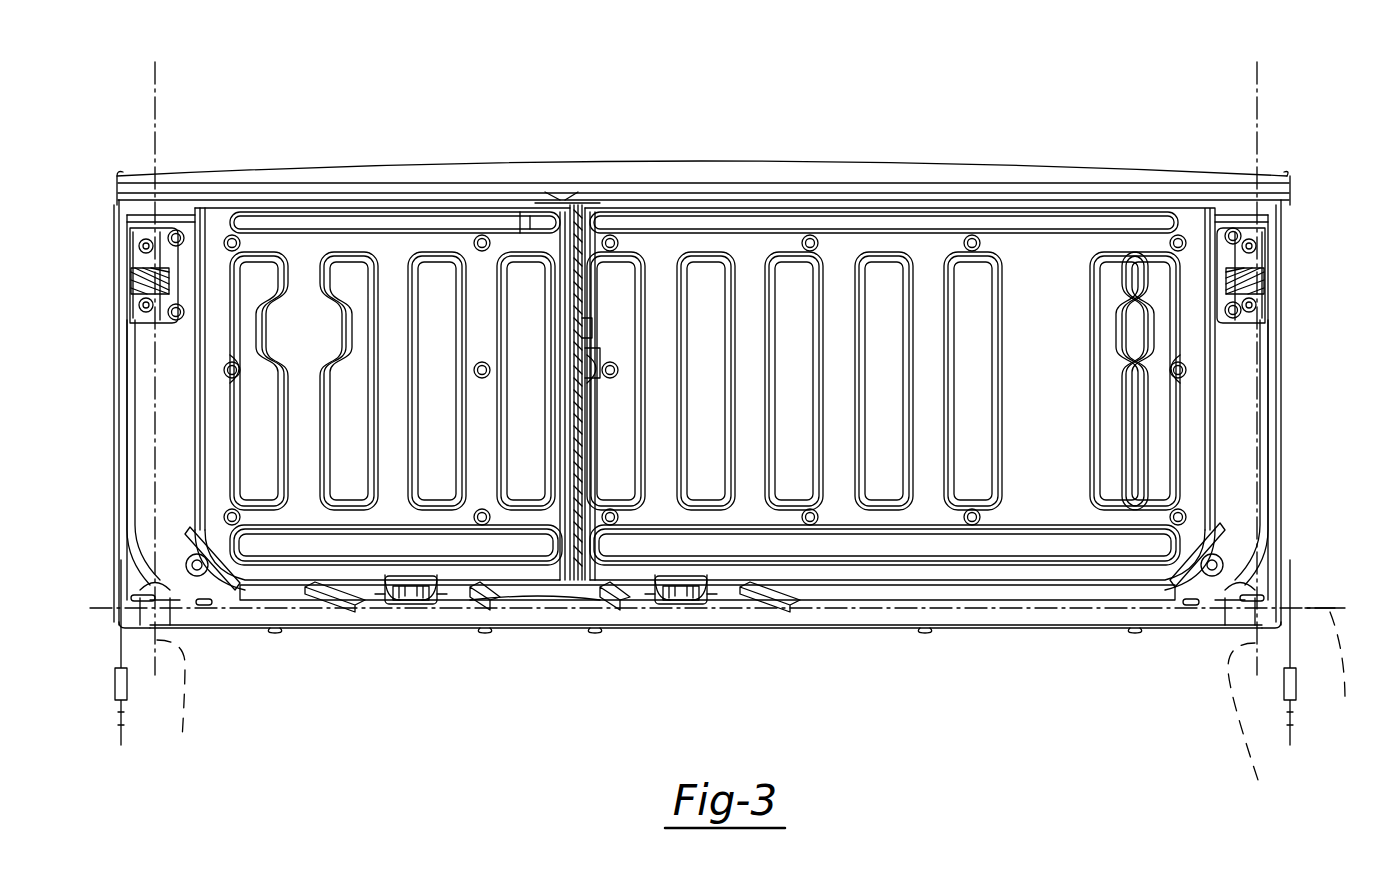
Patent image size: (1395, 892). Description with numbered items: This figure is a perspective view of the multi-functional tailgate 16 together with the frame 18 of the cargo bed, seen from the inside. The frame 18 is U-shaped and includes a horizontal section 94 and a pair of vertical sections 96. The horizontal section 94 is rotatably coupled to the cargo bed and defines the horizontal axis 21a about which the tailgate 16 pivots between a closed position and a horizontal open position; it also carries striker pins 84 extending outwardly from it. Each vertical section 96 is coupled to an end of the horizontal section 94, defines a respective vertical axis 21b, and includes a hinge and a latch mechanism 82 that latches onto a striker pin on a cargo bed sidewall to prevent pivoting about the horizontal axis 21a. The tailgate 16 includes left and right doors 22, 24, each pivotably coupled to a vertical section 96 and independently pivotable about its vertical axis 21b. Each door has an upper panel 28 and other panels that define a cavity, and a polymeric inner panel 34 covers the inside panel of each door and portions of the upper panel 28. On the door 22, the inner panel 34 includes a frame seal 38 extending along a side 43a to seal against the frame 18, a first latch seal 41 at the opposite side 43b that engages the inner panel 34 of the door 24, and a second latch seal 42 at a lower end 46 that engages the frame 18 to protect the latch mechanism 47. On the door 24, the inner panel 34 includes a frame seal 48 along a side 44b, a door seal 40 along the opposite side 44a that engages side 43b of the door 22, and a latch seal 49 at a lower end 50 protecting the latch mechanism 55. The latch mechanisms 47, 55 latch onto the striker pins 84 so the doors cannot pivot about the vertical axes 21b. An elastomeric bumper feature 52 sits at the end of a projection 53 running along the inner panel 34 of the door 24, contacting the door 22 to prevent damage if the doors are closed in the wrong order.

The multi-functional tailgate 16 is at (702, 334).
The frame 18 is at (707, 670).
The left door 22 is at (910, 387).
The right door 24 is at (687, 315).
The upper panel 28 is at (440, 175).
The inner panel 34 is at (385, 265).
The frame seal 38 is at (1220, 565).
The door seal 40 is at (572, 205).
The first latch seal 41 is at (585, 318).
The second latch seal 42 is at (715, 590).
The side of inner panel 43a is at (1192, 233).
The side of inner panel 43b is at (598, 240).
The side of inner panel 44a is at (545, 200).
The side of inner panel 44b is at (216, 218).
The lower end of inner panel 46 is at (1045, 570).
The latch mechanism 47 is at (678, 594).
The frame seal 48 is at (177, 230).
The latch seal 49 is at (440, 582).
The lower end of inner panel 50 is at (545, 577).
The bumper feature 52 is at (535, 210).
The projection 53 is at (265, 240).
The latch mechanism 55 is at (408, 594).
The latch mechanism 82 is at (128, 242).
The striker pins 84 is at (412, 606).
The horizontal section 94 is at (925, 630).
The vertical sections 96 is at (150, 465).
The horizontal axis 21a is at (745, 652).
The vertical axes 21b is at (705, 727).